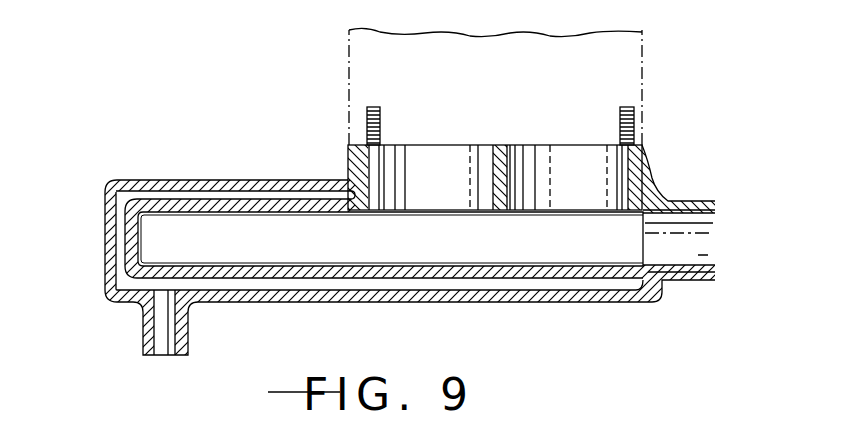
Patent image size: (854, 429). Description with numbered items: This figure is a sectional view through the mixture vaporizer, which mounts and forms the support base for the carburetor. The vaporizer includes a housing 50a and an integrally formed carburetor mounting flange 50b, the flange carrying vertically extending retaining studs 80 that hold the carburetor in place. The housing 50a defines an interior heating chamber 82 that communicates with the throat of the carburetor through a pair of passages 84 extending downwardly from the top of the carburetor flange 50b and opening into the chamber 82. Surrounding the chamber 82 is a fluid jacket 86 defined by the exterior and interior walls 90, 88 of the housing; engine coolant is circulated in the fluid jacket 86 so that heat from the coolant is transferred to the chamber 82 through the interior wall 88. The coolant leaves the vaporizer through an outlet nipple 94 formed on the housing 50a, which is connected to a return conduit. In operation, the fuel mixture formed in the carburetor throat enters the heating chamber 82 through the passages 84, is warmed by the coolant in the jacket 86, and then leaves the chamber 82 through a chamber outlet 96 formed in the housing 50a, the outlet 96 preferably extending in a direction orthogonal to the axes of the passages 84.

The housing 50a is at (107, 192).
The carburetor mounting flange 50b is at (640, 173).
The retaining studs 80 is at (383, 120).
The heating chamber 82 is at (442, 256).
The passages 84 is at (458, 190).
The fluid jacket 86 is at (184, 196).
The interior wall 88 is at (262, 183).
The exterior wall 90 is at (240, 208).
The outlet nipple 94 is at (183, 330).
The chamber outlet 96 is at (700, 264).